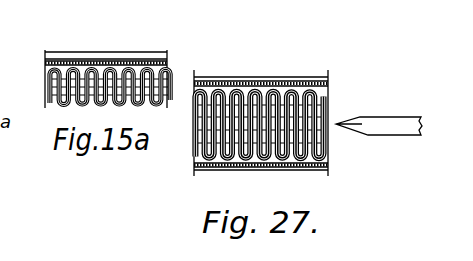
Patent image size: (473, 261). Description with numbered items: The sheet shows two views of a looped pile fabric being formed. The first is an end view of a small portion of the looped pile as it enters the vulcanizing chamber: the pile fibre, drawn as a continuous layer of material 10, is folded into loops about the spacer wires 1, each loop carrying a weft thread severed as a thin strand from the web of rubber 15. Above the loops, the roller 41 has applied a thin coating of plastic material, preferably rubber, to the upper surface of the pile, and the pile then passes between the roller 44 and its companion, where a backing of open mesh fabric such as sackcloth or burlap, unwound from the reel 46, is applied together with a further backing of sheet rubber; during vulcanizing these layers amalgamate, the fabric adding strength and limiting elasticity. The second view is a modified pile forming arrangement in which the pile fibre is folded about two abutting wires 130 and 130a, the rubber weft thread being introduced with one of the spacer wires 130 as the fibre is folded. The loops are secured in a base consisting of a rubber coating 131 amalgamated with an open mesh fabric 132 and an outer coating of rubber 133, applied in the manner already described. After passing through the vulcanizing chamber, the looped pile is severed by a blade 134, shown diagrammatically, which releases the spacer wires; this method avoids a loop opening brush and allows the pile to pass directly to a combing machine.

In FIG. 15A, the spacer wires 1 is at (62, 94).
In FIG. 15A, the material for forming the loops 10 is at (142, 100).
In FIG. 15A, the web of rubber 15 is at (72, 77).
In FIG. 15A, the roller 41 is at (140, 67).
In FIG. 15A, the roller 44 is at (102, 62).
In FIG. 15A, the reel 46 is at (47, 61).
In FIG. 27, the abutting wire 130 is at (200, 88).
In FIG. 27, the abutting wire 130a is at (217, 87).
In FIG. 27, the rubber coating 131 is at (323, 92).
In FIG. 27, the open mesh fabric 132 is at (328, 83).
In FIG. 27, the outer coating of rubber 133 is at (273, 80).
In FIG. 27, the blade 134 is at (388, 122).